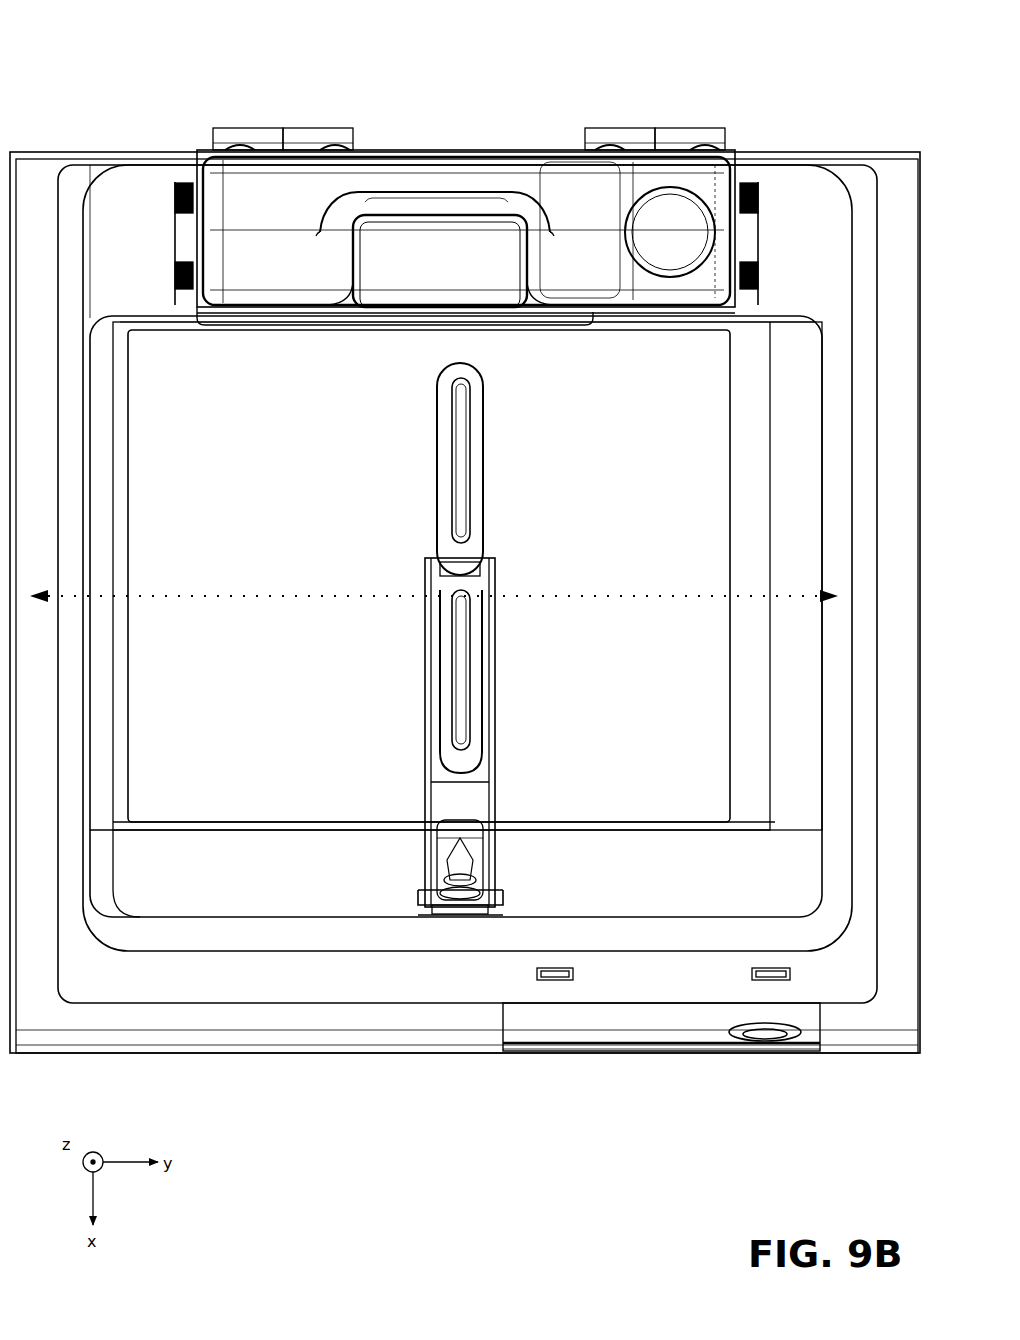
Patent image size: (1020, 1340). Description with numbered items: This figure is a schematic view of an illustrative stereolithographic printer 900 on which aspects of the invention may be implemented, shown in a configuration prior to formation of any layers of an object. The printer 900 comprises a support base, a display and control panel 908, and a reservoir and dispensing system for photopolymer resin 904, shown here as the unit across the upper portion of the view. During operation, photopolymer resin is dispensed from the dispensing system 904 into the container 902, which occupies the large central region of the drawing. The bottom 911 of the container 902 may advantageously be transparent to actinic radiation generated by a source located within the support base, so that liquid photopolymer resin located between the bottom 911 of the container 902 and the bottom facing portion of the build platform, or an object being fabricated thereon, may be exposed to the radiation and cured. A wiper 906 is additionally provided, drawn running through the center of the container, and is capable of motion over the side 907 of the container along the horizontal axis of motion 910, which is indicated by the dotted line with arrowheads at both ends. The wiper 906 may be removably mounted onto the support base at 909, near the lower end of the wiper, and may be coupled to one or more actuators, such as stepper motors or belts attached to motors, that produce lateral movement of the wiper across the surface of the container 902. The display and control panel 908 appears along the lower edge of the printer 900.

The stereolithographic printer 900 is at (95, 38).
The container 902 is at (779, 323).
The reservoir and dispensing system for photopolymer resin 904 is at (708, 178).
The wiper 906 is at (476, 552).
The side 907 is at (262, 826).
The display and control panel 908 is at (657, 1013).
The wiper mounting location 909 is at (452, 922).
The horizontal axis of motion 910 is at (252, 602).
The bottom of container 911 is at (429, 576).